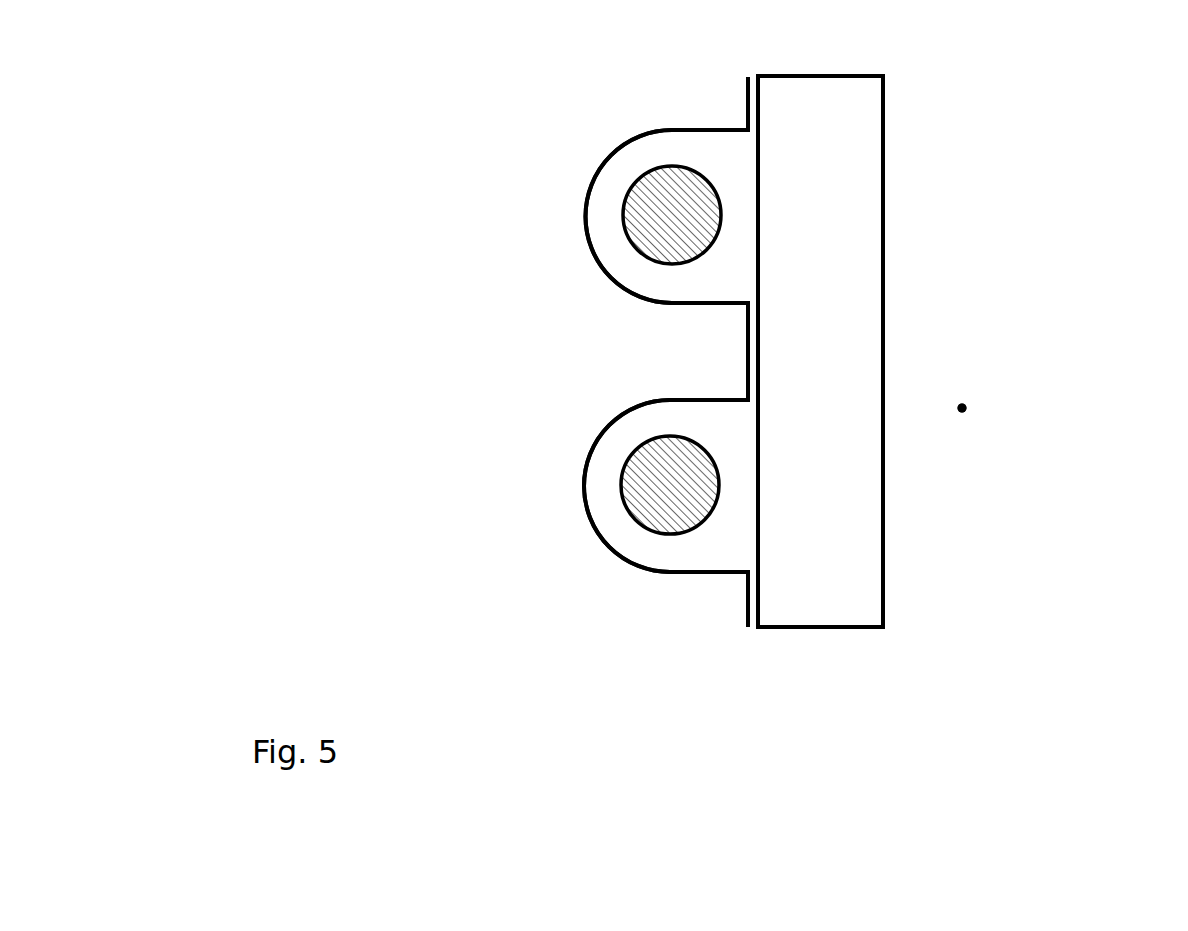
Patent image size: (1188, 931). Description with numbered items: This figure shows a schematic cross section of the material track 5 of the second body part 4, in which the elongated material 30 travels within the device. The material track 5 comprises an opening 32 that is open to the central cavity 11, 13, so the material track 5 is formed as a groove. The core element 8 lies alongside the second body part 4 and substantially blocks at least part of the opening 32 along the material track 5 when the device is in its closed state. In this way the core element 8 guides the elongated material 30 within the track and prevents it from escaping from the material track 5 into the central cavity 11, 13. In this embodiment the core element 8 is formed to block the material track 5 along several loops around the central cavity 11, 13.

The second body part 4 is at (745, 598).
The material track 5 is at (585, 503).
The core element 8 is at (843, 243).
The elongated material 30 is at (638, 455).
The opening 32 is at (743, 172).
The central cavity 11 is at (962, 408).
The central cavity 13 is at (962, 408).